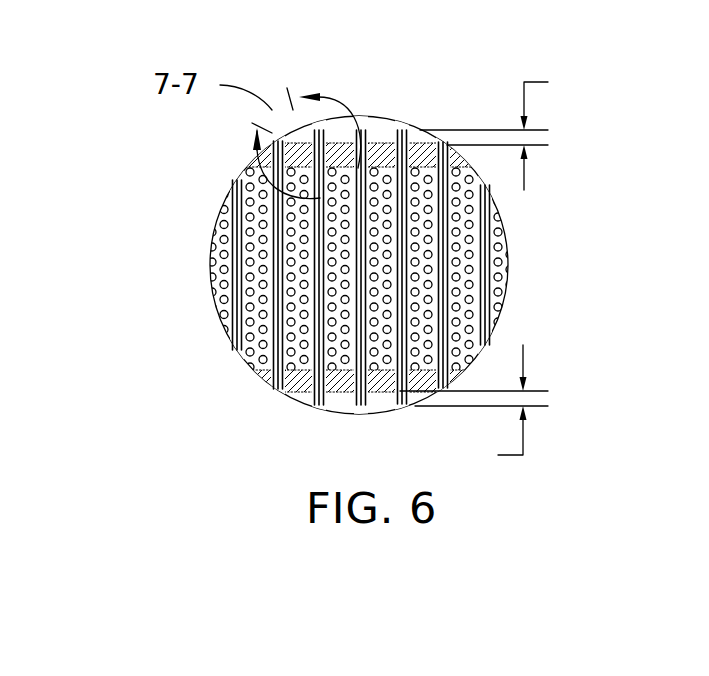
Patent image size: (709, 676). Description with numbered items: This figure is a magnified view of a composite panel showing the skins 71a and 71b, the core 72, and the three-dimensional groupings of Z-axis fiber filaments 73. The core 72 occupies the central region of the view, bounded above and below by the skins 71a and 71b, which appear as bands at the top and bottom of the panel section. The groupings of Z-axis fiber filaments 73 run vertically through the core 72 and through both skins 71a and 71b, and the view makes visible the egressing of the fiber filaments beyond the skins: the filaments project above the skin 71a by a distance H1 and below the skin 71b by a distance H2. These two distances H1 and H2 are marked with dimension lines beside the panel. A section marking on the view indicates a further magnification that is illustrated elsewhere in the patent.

The skin 71a is at (377, 147).
The skin 71b is at (382, 392).
The core 72 is at (470, 275).
The 3-D groupings of Z-axis fiber filaments 73 is at (272, 253).
The distance H1 is at (507, 130).
The distance H2 is at (474, 410).